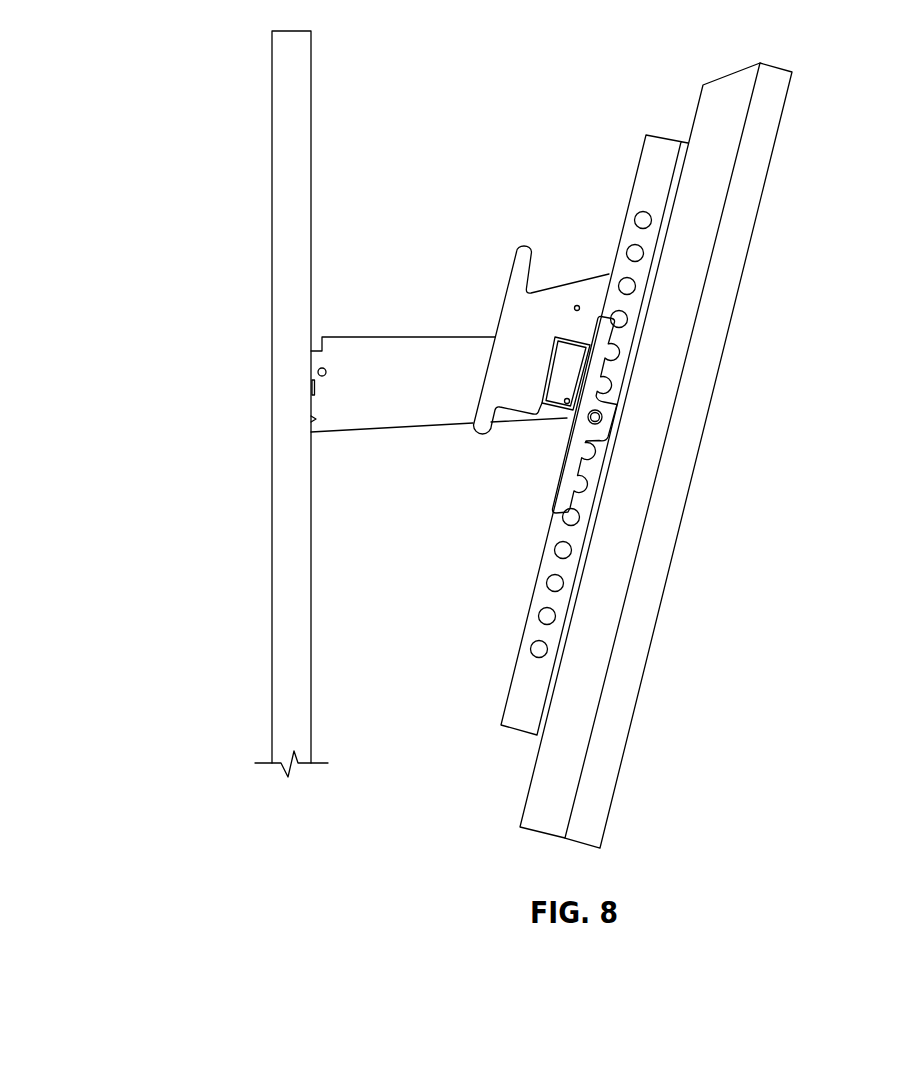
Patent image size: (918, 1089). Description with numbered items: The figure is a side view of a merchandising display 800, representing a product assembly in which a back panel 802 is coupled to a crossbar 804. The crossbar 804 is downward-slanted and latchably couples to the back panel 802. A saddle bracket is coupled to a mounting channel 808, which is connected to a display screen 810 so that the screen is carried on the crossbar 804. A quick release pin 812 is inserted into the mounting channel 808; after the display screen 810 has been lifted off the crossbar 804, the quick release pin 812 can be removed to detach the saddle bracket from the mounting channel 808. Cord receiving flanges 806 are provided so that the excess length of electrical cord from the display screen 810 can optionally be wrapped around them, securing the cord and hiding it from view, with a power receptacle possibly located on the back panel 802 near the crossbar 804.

The merchandising display 800 is at (102, 61).
The back panel 802 is at (272, 397).
The crossbar 804 is at (362, 431).
The cord receiving flanges 806 is at (519, 244).
The mounting channel 808 is at (501, 727).
The display screen 810 is at (690, 490).
The quick release pin 812 is at (588, 418).